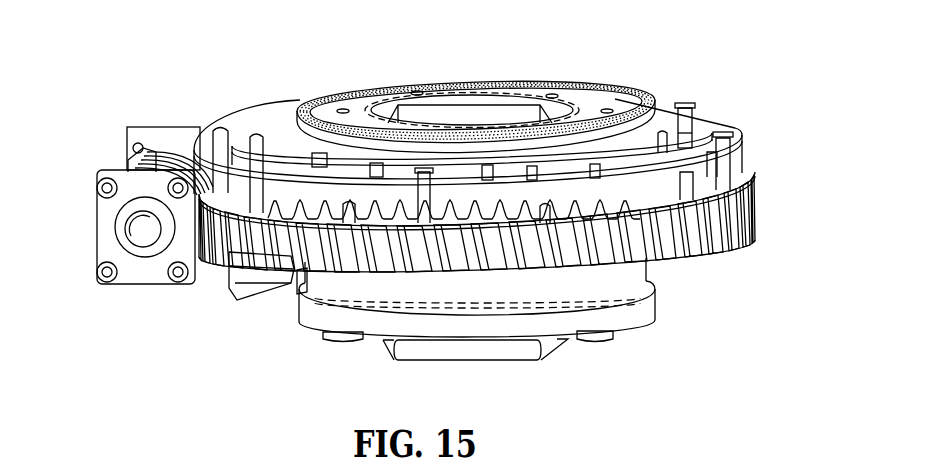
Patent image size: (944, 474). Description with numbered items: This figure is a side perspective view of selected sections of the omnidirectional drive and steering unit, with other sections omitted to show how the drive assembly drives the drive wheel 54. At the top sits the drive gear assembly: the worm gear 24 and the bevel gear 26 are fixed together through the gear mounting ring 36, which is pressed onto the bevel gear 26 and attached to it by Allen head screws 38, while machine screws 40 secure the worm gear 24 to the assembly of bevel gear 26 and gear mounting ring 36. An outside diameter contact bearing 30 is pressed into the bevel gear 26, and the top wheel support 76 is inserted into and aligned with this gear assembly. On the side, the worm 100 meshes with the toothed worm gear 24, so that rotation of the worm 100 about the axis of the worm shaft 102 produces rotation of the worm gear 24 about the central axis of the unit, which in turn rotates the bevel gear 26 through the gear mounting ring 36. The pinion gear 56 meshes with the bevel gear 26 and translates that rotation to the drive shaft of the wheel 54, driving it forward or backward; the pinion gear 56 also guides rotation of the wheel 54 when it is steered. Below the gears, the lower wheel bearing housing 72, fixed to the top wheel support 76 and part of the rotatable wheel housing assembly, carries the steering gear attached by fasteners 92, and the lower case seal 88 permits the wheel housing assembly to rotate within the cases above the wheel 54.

The worm gear 24 is at (735, 228).
The bevel gear 26 is at (700, 143).
The outside diameter contact bearing 30 is at (300, 110).
The gear mounting ring 36 is at (253, 115).
The Allen head screws 38 is at (695, 127).
The machine screws 40 is at (727, 160).
The drive wheel 54 is at (420, 357).
The pinion gear 56 is at (240, 290).
The lower wheel bearing housing 72 is at (627, 273).
The top wheel support 76 is at (573, 97).
The lower case seal 88 is at (630, 313).
The fasteners 92 is at (602, 342).
The worm 100 is at (175, 153).
The worm shaft 102 is at (133, 238).